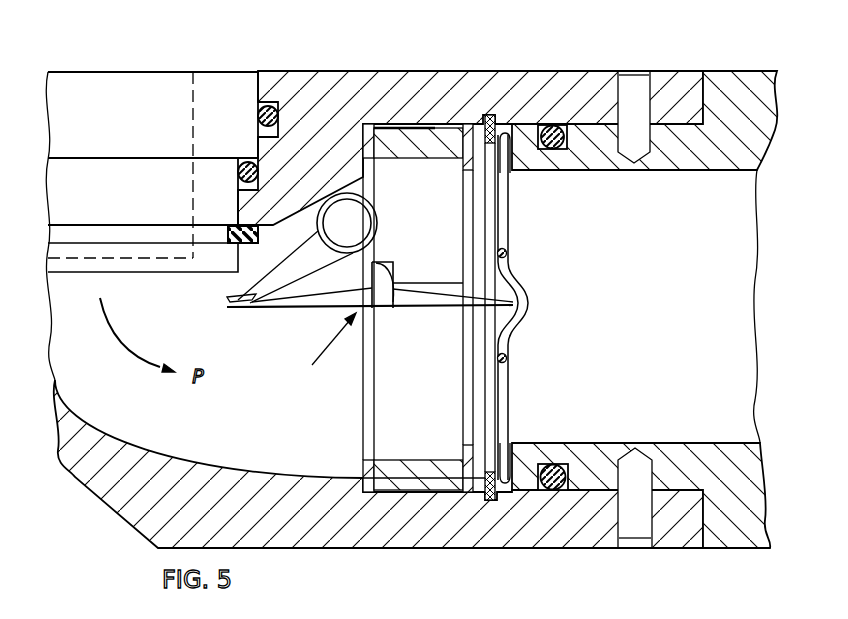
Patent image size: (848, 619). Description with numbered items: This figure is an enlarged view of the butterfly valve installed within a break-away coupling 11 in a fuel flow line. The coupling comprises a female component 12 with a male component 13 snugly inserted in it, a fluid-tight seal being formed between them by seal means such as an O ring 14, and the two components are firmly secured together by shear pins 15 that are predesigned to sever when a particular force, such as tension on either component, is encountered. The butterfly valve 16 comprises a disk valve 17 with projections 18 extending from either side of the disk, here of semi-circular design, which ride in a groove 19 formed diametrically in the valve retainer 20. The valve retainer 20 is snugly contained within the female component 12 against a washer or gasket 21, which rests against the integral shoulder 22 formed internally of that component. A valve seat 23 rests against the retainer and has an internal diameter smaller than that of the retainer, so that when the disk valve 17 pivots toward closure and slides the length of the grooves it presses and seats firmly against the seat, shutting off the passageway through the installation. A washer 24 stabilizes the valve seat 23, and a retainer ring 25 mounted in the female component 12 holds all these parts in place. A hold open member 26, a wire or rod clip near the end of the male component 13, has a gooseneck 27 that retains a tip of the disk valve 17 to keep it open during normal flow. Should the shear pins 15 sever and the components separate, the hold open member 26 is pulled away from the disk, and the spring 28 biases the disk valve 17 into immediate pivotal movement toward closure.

The break-away coupling 11 is at (588, 56).
The female component 12 is at (355, 87).
The male component 13 is at (715, 130).
The O ring 14 is at (553, 128).
The shear pins 15 is at (643, 105).
The butterfly valve 16 is at (320, 347).
The disk valve 17 is at (305, 305).
The projections 18 is at (385, 298).
The groove 19 is at (425, 283).
The valve retainer 20 is at (442, 148).
The washer or gasket 21 is at (363, 430).
The integral shoulder 22 is at (365, 480).
The valve seat 23 is at (465, 187).
The washer 24 is at (478, 432).
The retainer ring 25 is at (510, 432).
The hold open member 26 is at (509, 397).
The gooseneck 27 is at (513, 315).
The spring 28 is at (320, 235).